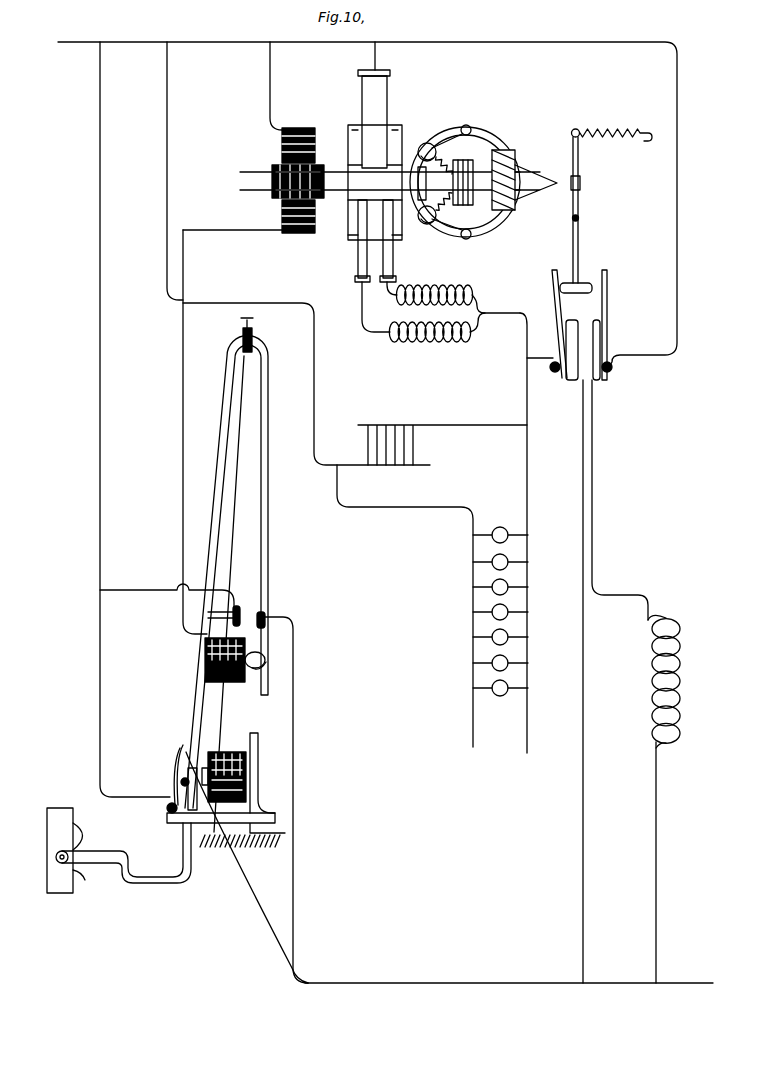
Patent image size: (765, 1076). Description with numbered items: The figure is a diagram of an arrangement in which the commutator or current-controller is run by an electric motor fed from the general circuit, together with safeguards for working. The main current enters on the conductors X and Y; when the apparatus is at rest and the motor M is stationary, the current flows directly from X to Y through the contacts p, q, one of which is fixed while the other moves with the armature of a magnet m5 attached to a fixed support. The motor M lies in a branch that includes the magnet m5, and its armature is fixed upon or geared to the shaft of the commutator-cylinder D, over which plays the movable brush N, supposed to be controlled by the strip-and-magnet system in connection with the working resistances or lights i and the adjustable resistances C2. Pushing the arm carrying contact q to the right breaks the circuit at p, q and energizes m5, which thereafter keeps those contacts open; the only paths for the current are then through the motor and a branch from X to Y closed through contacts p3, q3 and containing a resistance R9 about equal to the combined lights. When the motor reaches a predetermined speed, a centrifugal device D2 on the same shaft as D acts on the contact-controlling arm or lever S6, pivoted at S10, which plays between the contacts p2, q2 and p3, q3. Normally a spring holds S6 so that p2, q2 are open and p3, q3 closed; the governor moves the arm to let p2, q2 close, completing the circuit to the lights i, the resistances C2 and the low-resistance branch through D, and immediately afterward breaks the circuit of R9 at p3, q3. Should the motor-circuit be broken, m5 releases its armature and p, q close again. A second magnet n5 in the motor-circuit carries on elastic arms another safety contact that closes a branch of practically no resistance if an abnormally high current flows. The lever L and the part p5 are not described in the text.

The main conductor Y is at (351, 204).
The main conductor X is at (509, 973).
The electric motor M is at (298, 170).
The lever L is at (374, 119).
The commutator-cylinder D is at (350, 166).
The centrifugal device D2 is at (478, 136).
The movable brush N is at (375, 241).
The contact-controlling arm S6 is at (579, 147).
The pivot S10 is at (579, 218).
The contact p2 is at (556, 306).
The contact q2 is at (396, 467).
The contact p3 is at (596, 346).
The contact q3 is at (608, 322).
The adjustable resistances C2 is at (442, 455).
The lights i is at (500, 611).
The resistance R9 is at (675, 681).
The magnet n5 is at (235, 668).
The magnet m5 is at (238, 773).
The movable contact q is at (183, 758).
The fixed contact p is at (180, 781).
The pedal lever p5 is at (119, 852).